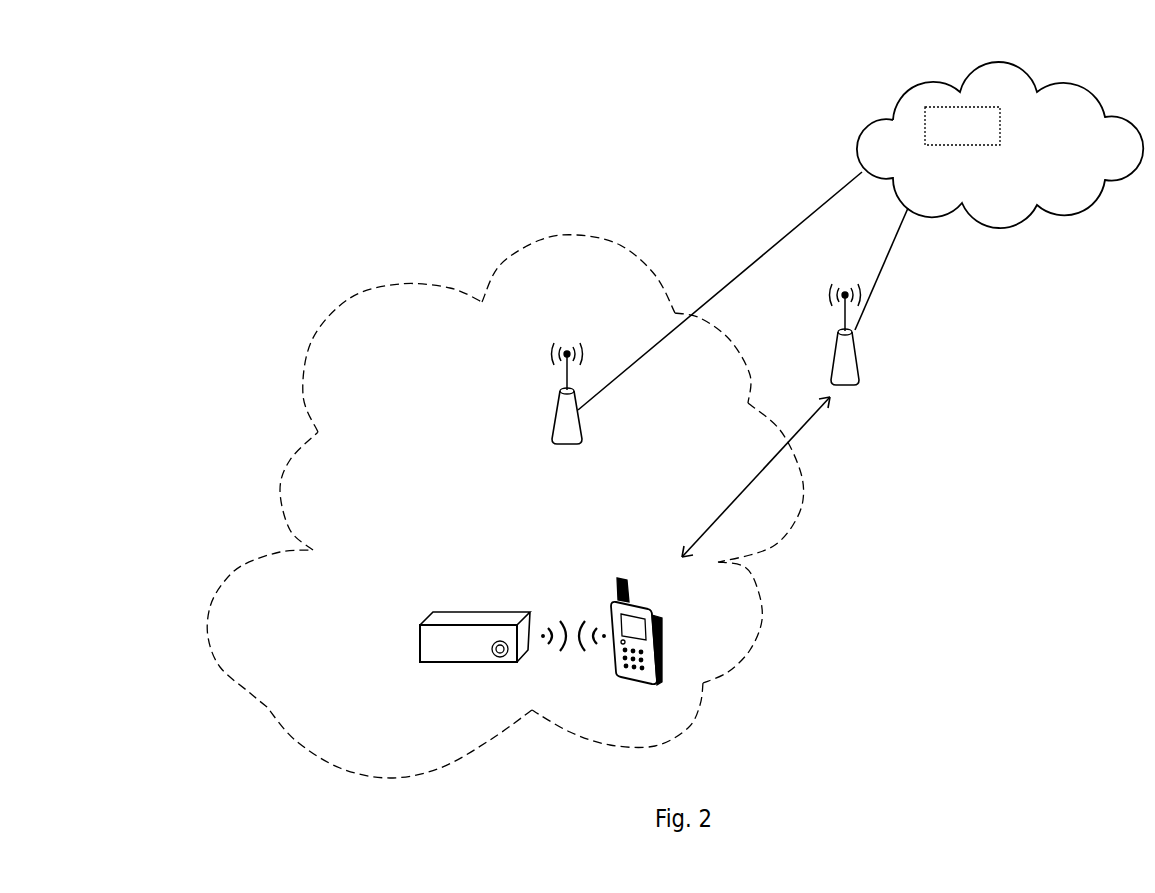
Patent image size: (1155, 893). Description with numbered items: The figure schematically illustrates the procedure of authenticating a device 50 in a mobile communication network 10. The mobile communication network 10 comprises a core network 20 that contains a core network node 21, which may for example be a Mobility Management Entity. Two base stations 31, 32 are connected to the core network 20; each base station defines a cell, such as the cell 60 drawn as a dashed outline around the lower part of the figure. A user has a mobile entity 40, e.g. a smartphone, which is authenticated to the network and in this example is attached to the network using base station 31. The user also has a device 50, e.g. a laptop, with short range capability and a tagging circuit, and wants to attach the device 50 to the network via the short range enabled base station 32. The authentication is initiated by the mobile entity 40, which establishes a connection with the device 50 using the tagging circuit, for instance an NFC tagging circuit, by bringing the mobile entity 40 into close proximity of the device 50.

The mobile communication network 10 is at (755, 142).
The core network 20 is at (913, 87).
The core network node 21 is at (962, 126).
The base station 31 is at (858, 362).
The base station 32 is at (555, 414).
The mobile entity 40 is at (677, 636).
The device 50 is at (420, 639).
The cell 60 is at (350, 298).